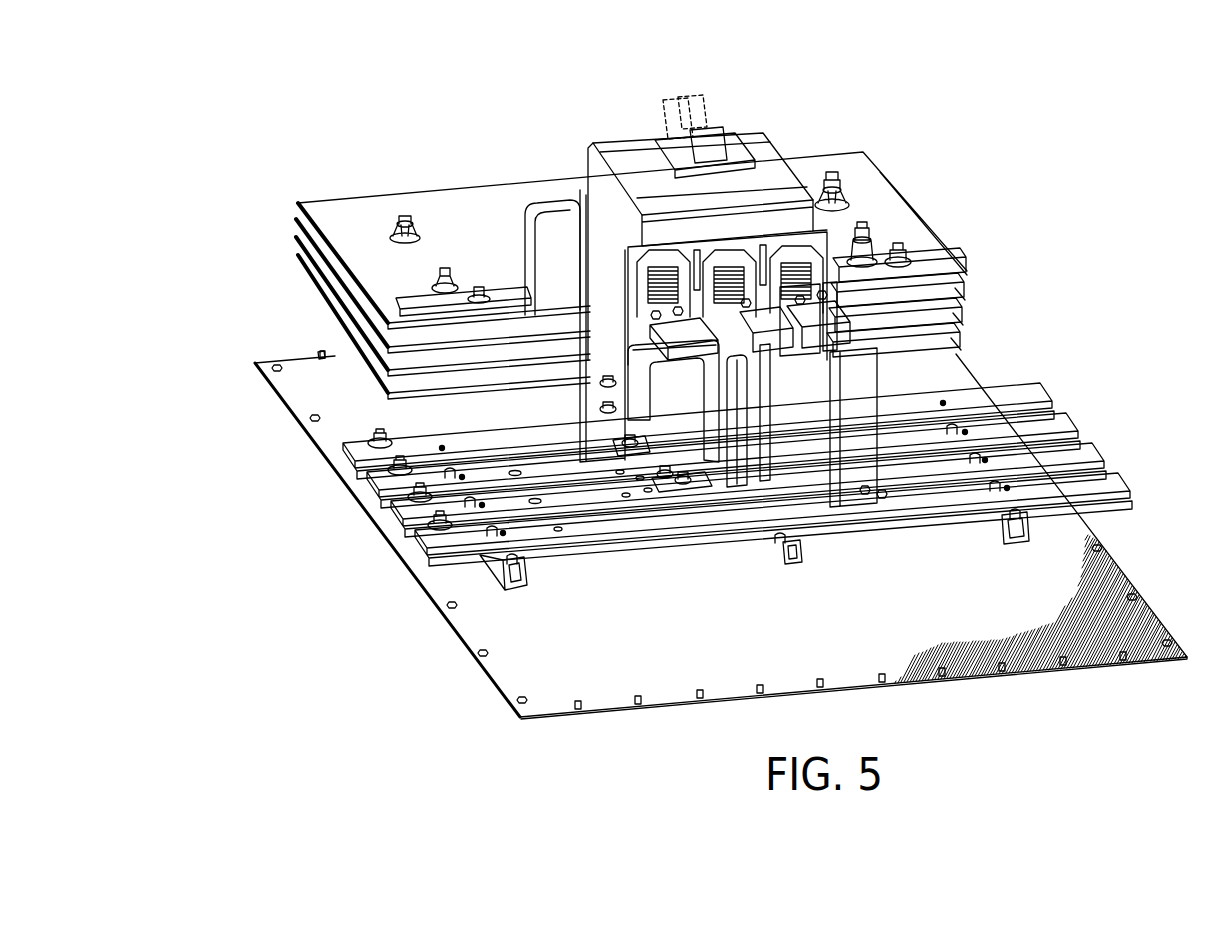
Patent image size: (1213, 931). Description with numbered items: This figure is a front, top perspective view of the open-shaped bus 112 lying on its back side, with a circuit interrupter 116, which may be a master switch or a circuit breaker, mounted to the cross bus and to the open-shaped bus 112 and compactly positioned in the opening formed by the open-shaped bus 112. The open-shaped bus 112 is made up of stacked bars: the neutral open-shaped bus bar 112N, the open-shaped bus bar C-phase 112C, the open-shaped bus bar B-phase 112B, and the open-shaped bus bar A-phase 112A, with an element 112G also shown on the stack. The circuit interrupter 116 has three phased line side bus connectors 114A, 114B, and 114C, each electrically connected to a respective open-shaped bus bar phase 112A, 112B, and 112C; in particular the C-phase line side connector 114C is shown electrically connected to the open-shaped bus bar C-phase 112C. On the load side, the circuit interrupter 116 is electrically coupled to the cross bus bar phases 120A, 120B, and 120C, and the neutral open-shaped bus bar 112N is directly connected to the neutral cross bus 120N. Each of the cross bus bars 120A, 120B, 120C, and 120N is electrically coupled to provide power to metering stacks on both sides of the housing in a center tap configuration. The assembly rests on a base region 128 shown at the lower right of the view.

The open-shaped bus 112 is at (567, 254).
The neutral open-shaped bus bar 112N is at (297, 203).
The open-shaped bus bar C-phase 112C is at (297, 218).
The open-shaped bus bar B-phase 112B is at (297, 238).
The open-shaped bus bar A-phase 112A is at (297, 257).
The ground connection 112G is at (320, 340).
The A-phase line side bus connector 114A is at (837, 331).
The B-phase line side bus connector 114B is at (757, 318).
The C-phase line side bus connector 114C is at (566, 206).
The circuit interrupter 116 is at (702, 132).
The neutral cross bus 120N is at (1017, 396).
The cross bus bar C-phase 120C is at (1047, 428).
The cross bus bar B-phase 120B is at (1077, 460).
The cross bus bar A-phase 120A is at (1113, 490).
The mounting base plate 128 is at (1097, 592).